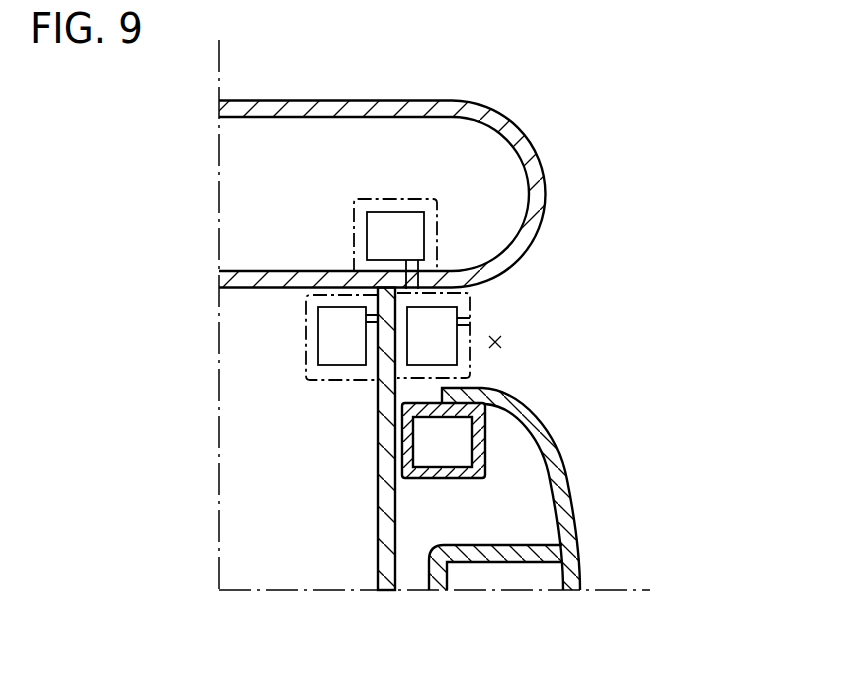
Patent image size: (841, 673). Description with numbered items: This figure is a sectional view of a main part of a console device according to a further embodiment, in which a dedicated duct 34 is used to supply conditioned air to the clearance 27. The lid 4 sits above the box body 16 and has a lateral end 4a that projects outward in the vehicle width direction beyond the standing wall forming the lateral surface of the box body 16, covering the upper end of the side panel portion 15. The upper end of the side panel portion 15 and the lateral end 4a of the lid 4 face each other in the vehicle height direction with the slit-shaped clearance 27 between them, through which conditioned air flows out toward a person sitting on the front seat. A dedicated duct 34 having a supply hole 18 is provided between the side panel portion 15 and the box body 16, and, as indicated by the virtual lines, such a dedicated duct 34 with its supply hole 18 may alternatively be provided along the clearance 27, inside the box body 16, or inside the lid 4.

The lid 4 is at (425, 155).
The lateral end 4a is at (542, 168).
The dedicated duct 34 is at (370, 197).
The supply hole 18 is at (413, 260).
The clearance 27 is at (500, 343).
The side panel portion 15 is at (592, 512).
The box body 16 is at (401, 577).